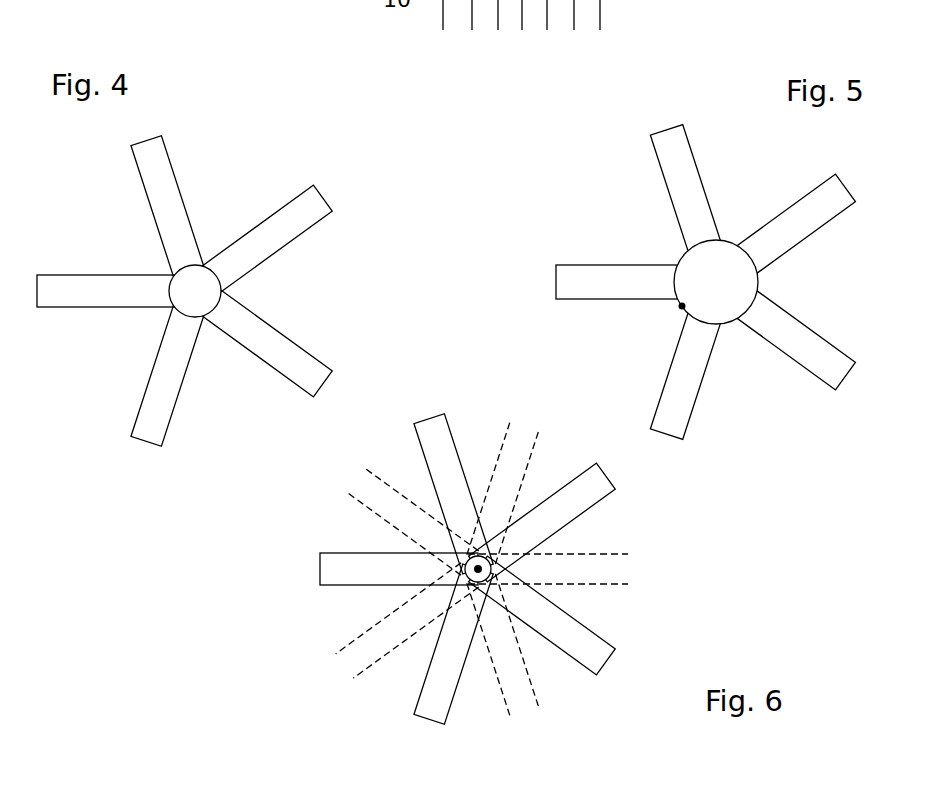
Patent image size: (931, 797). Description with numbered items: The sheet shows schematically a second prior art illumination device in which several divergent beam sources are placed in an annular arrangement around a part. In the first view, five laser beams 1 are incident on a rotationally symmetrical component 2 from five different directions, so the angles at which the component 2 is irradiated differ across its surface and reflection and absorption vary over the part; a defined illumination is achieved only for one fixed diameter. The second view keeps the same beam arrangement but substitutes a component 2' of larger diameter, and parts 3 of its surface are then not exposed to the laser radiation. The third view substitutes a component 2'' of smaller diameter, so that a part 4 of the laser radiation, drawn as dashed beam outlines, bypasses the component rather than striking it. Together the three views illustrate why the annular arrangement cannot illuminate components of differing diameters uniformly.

In FIG. 4, the laser beams 1 is at (161, 195).
In FIG. 5, the laser beams 1 is at (821, 365).
In FIG. 6, the laser beams 1 is at (340, 563).
In FIG. 4, the rotationally symmetrical component 2 is at (271, 290).
In FIG. 5, the component 2' is at (716, 282).
In FIG. 5, the parts of the surface 3 is at (682, 306).
In FIG. 6, the part of the laser radiation 4 is at (518, 450).
In FIG. 6, the component 2'' is at (554, 589).